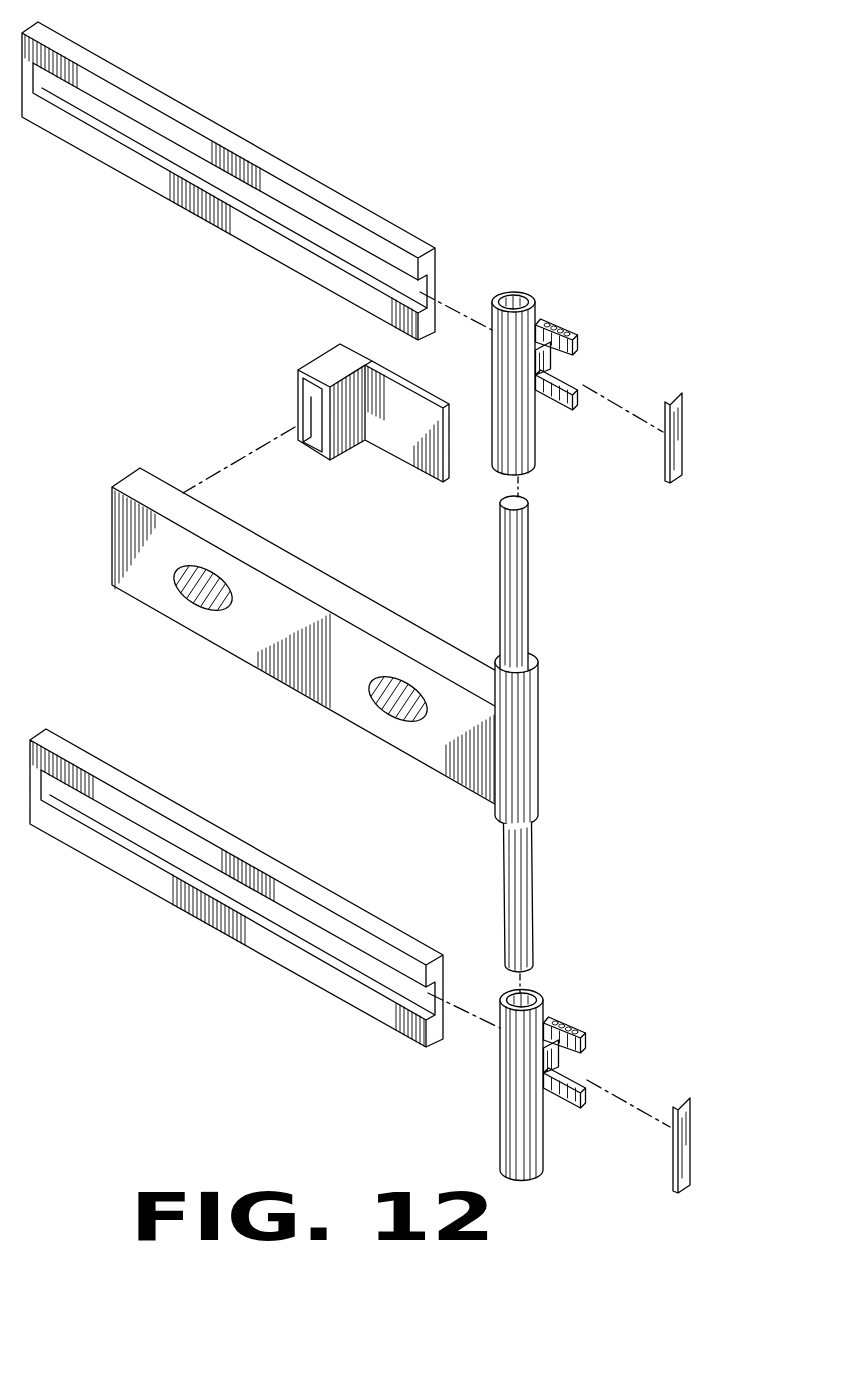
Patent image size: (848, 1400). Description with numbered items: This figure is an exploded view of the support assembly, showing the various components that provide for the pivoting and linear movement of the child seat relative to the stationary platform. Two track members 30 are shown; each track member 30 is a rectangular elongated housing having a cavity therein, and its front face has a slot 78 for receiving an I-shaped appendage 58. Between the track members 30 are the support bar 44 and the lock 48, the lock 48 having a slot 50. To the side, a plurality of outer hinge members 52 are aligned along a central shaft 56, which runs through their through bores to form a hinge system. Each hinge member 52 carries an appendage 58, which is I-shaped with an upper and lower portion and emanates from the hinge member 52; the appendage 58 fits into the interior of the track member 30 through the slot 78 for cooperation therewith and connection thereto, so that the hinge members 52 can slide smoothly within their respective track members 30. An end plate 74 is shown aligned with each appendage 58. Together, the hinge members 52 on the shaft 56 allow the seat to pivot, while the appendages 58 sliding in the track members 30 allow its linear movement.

The track member 30 is at (108, 163).
The support bar 44 is at (353, 723).
The lock 48 is at (330, 347).
The slot 50 is at (297, 370).
The outer hinge member 52 is at (537, 457).
The central shaft 56 is at (523, 617).
The I-shaped appendage 58 is at (553, 313).
The end plate 74 is at (668, 486).
The slot 78 is at (279, 232).